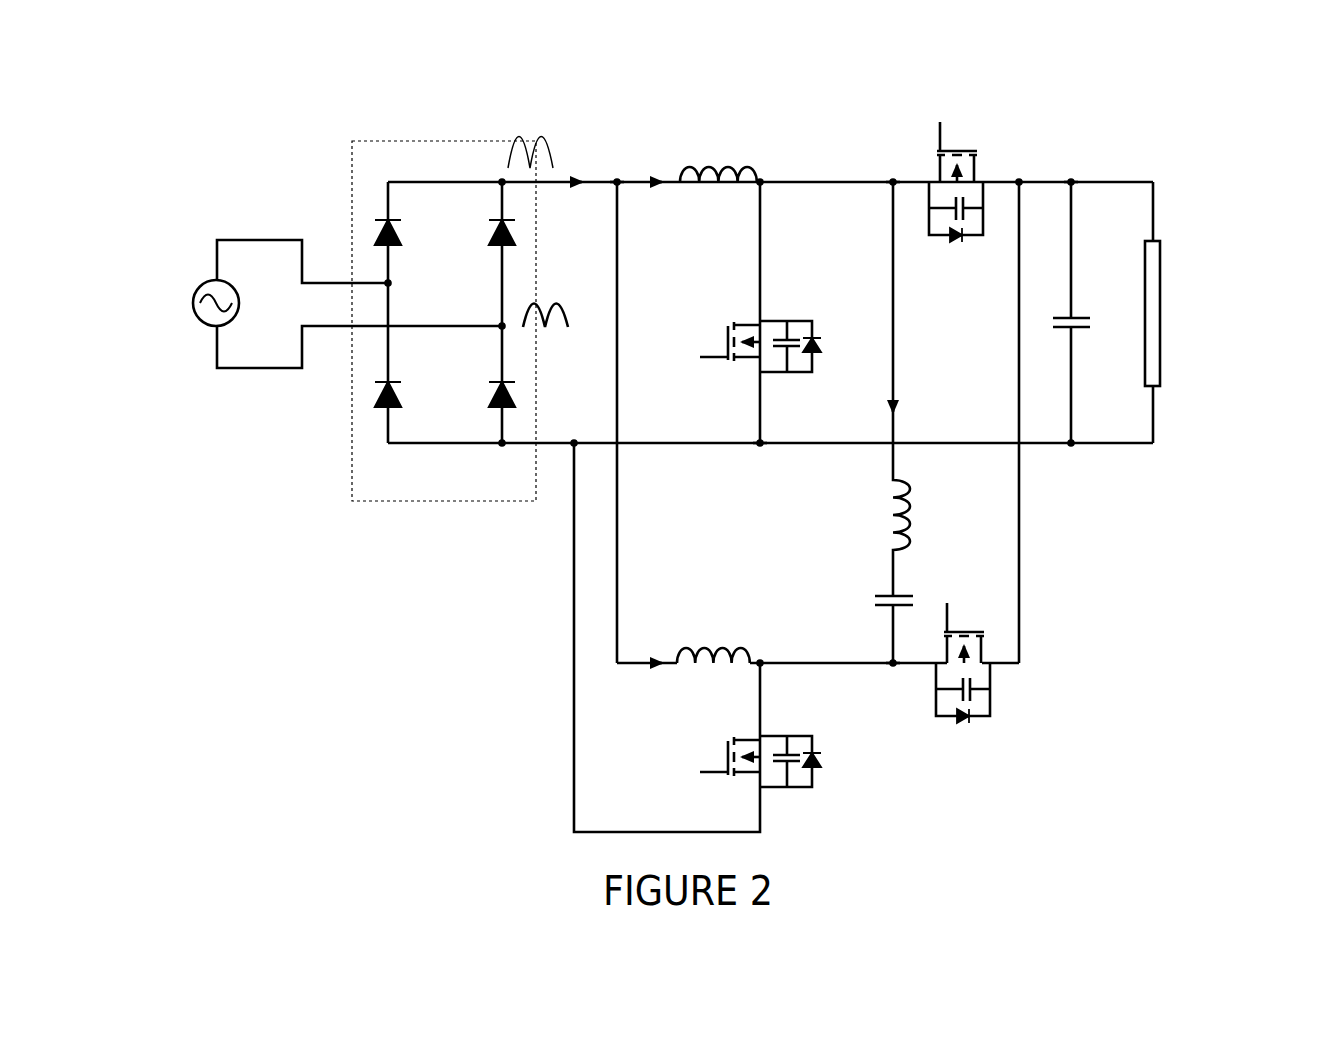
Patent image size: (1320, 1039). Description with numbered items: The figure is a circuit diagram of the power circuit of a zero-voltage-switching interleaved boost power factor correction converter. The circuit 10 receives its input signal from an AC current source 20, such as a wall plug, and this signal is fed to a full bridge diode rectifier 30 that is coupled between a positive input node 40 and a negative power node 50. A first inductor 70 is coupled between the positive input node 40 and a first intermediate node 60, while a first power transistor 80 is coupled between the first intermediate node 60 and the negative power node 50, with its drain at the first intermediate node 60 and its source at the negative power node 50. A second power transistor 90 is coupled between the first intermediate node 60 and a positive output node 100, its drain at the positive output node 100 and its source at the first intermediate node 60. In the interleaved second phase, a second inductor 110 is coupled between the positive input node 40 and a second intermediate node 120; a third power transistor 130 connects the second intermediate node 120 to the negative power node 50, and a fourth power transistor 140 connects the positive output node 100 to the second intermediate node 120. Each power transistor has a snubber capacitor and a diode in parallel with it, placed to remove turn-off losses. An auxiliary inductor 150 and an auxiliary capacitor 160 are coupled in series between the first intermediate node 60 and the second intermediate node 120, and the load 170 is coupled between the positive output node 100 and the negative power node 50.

The circuit 10 is at (433, 613).
The AC current source 20 is at (198, 272).
The full bridge diode rectifier 30 is at (352, 472).
The positive input node 40 is at (619, 180).
The negative power node 50 is at (757, 447).
The first intermediate node 60 is at (893, 182).
The first inductor 70 is at (743, 168).
The first power transistor 80 is at (787, 300).
The second power transistor 90 is at (990, 114).
The positive output node 100 is at (1071, 182).
The second inductor 110 is at (697, 678).
The second intermediate node 120 is at (893, 670).
The third power transistor 130 is at (693, 768).
The fourth power transistor 140 is at (1000, 687).
The auxiliary inductor 150 is at (922, 507).
The auxiliary capacitor 160 is at (882, 615).
The load 170 is at (1165, 340).